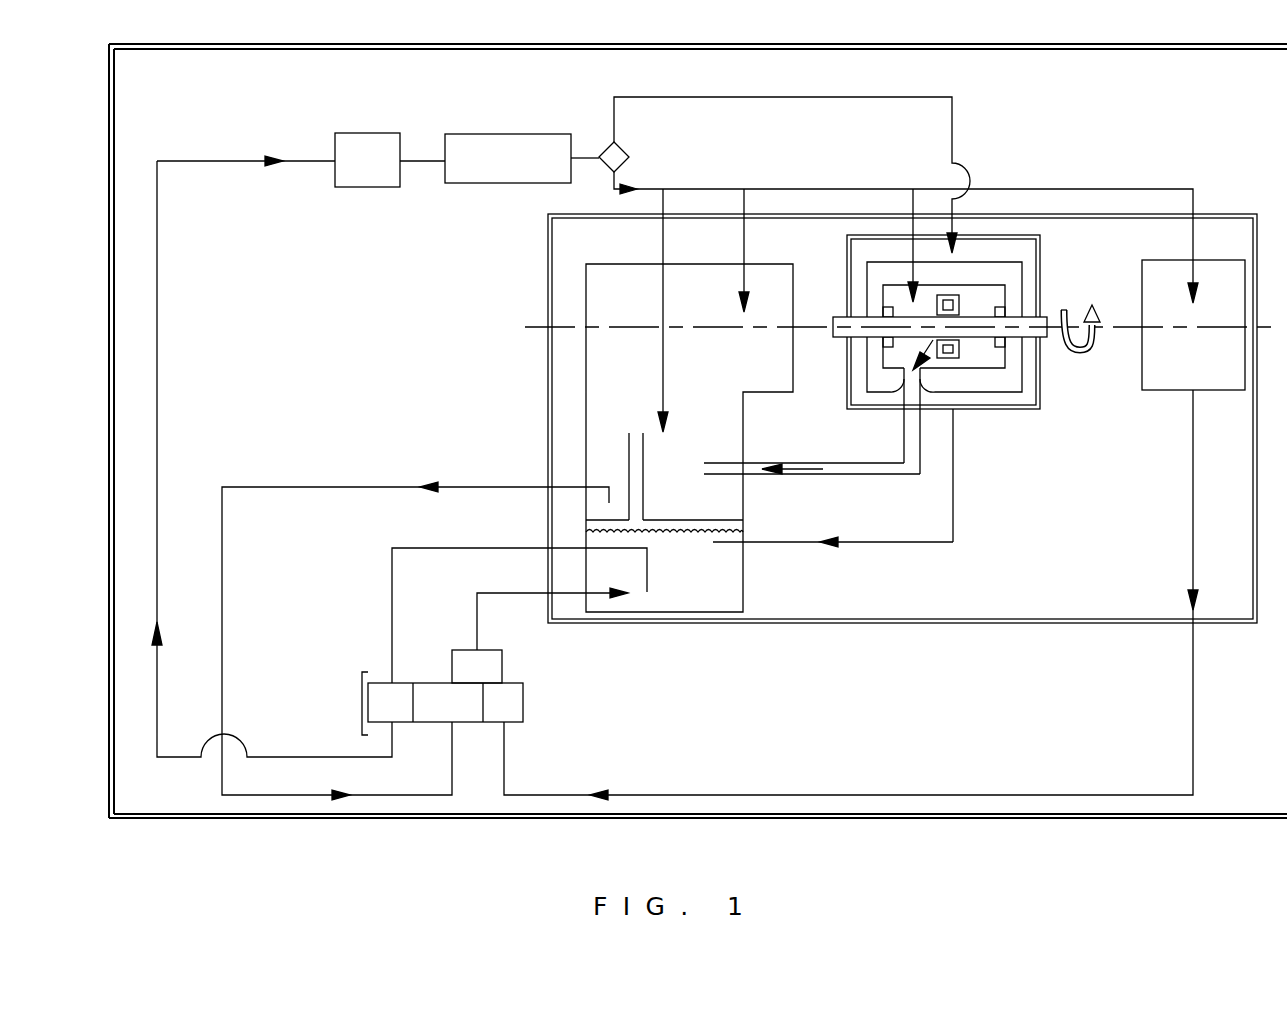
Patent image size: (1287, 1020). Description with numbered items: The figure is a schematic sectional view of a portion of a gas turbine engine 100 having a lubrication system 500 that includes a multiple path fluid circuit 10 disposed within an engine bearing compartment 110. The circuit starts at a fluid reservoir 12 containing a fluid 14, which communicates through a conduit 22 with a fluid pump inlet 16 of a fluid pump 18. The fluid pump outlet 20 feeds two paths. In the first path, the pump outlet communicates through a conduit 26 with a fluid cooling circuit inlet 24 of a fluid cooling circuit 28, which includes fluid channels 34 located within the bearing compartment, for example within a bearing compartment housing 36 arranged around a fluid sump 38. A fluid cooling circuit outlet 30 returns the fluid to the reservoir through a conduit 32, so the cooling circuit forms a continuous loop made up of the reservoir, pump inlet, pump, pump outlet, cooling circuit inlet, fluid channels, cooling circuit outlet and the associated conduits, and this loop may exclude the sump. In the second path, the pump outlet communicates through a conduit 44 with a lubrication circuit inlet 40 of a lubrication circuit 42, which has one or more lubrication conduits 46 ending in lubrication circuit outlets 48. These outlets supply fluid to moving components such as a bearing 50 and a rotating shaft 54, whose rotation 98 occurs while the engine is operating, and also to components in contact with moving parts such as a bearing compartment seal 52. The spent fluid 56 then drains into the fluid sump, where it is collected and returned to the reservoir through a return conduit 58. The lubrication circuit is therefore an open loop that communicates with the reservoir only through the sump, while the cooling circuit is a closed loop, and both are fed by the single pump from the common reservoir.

The multiple path fluid circuit 10 is at (985, 168).
The fluid reservoir 12 is at (586, 540).
The fluid 14 is at (665, 547).
The fluid pump inlet 16 is at (393, 665).
The fluid pump 18 is at (388, 697).
The fluid pump outlet 20 is at (393, 735).
The conduit 22 is at (392, 582).
The fluid cooling circuit inlet 24 is at (614, 120).
The conduit 26 is at (380, 478).
The conduit 44 is at (160, 465).
The fluid cooling circuit 28 is at (757, 97).
The fluid cooling circuit outlet 30 is at (728, 543).
The conduit 32 is at (953, 487).
The fluid channels 34 is at (1022, 275).
The bearing compartment housing 36 is at (1012, 388).
The fluid sump 38 is at (893, 363).
The lubrication circuit inlet 40 is at (604, 172).
The lubrication circuit 42 is at (826, 188).
The lubrication conduits 46 is at (910, 226).
The lubrication circuit outlets 48 is at (912, 268).
The bearing 50 is at (948, 298).
The bearing compartment seal 52 is at (888, 308).
The rotating shaft 54 is at (855, 340).
The spent fluid 56 is at (933, 342).
The return conduit 58 is at (718, 462).
The rotation 98 is at (1088, 346).
The gas turbine engine 100 is at (548, 297).
The engine bearing compartment 110 is at (975, 411).
The lubrication system 500 is at (116, 296).